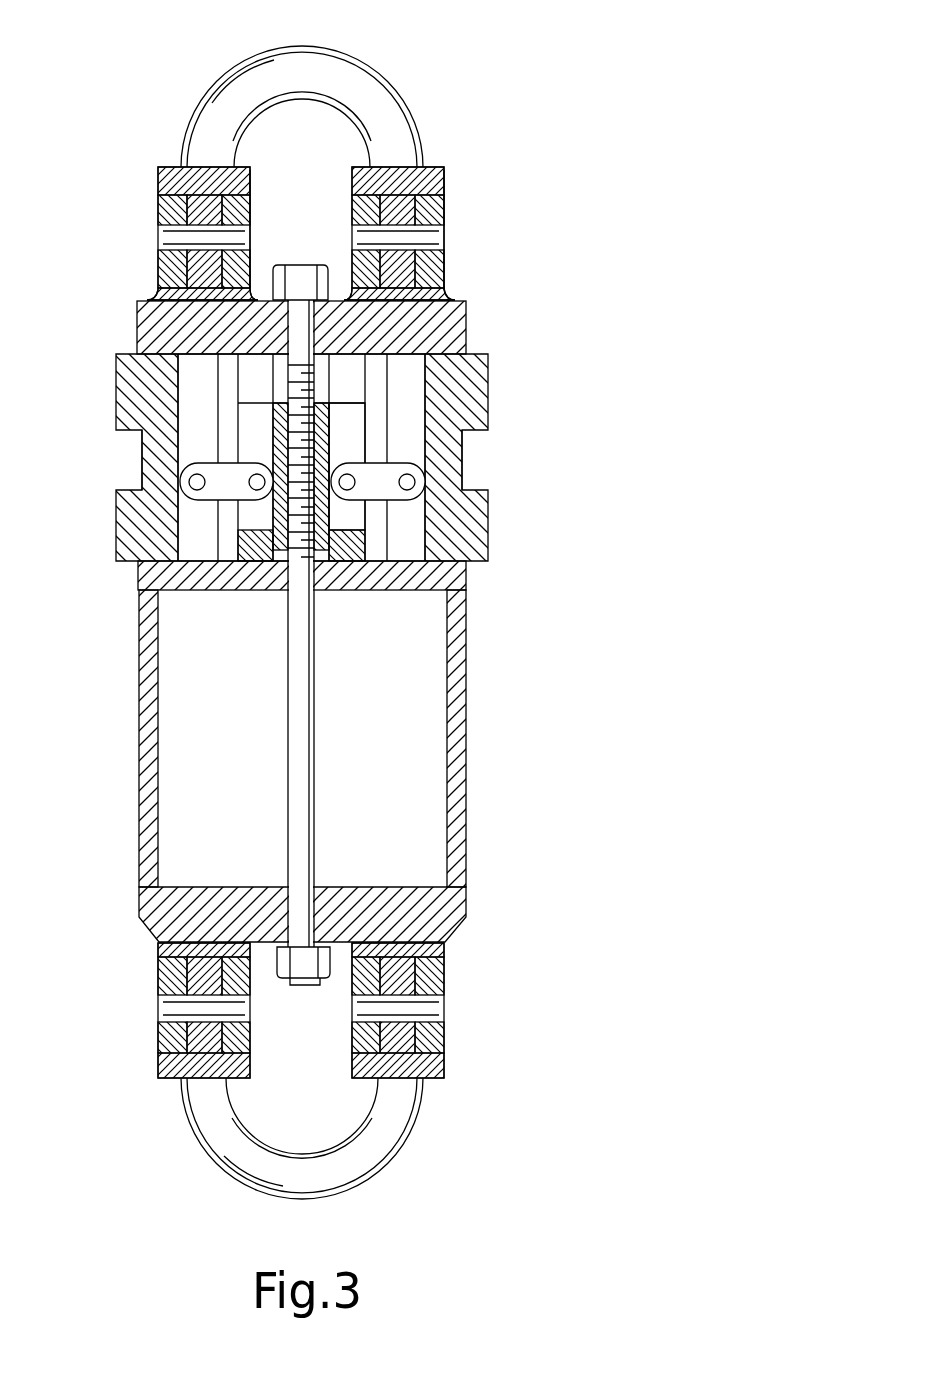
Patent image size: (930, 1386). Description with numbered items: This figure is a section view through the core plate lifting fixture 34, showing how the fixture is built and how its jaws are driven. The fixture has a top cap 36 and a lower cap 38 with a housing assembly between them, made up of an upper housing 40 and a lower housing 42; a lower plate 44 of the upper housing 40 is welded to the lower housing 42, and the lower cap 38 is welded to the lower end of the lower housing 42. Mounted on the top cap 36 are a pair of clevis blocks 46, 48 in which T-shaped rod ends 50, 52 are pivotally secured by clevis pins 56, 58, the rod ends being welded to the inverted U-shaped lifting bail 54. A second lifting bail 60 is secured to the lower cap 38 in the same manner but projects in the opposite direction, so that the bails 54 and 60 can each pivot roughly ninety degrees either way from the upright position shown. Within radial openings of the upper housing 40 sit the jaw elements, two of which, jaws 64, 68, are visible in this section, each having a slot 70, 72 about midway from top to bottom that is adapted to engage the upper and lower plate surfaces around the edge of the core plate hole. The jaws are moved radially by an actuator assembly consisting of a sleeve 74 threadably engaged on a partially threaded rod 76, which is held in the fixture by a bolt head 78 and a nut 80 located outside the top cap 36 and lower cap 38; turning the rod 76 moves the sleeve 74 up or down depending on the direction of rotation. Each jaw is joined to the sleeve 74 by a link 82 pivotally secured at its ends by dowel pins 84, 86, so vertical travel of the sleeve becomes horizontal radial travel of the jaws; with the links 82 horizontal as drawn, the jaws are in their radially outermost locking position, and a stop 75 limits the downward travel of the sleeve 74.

The core plate lifting fixture 34 is at (700, 240).
The top cap 36 is at (131, 299).
The lower cap 38 is at (425, 935).
The upper housing 40 is at (480, 540).
The lower housing 42 is at (468, 715).
The lower plate 44 is at (463, 563).
The clevis block 46 is at (157, 208).
The clevis block 48 is at (445, 203).
The T-shaped rod end 50 is at (253, 183).
The T-shaped rod end 52 is at (428, 167).
The lifting bail 54 is at (345, 74).
The clevis pin 56 is at (171, 232).
The clevis pin 58 is at (445, 233).
The second lifting bail 60 is at (405, 1150).
The jaw element 64 is at (116, 365).
The jaw element 68 is at (472, 381).
The slot 70 is at (140, 442).
The slot 72 is at (463, 457).
The sleeve 74 is at (352, 423).
The stop 75 is at (243, 537).
The threaded rod 76 is at (285, 720).
The bolt head 78 is at (331, 257).
The nut 80 is at (278, 982).
The link 82 is at (425, 462).
The dowel pin 84 is at (350, 478).
The dowel pin 86 is at (415, 482).